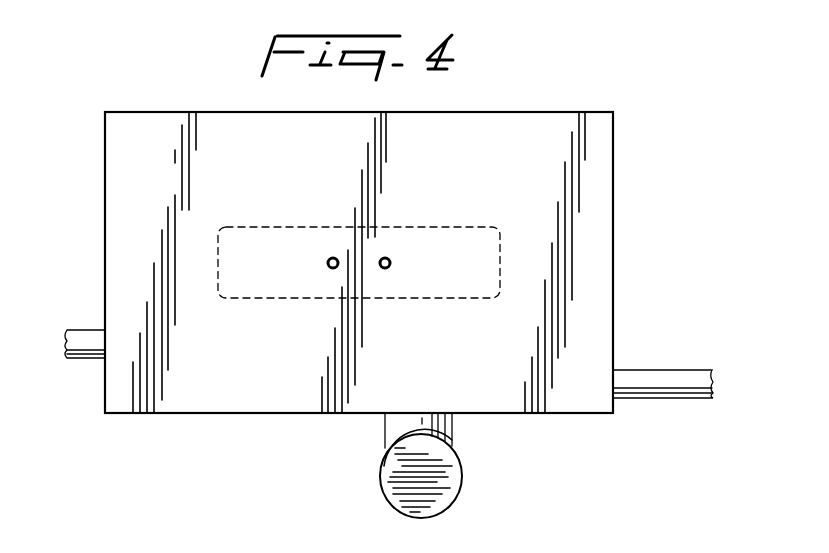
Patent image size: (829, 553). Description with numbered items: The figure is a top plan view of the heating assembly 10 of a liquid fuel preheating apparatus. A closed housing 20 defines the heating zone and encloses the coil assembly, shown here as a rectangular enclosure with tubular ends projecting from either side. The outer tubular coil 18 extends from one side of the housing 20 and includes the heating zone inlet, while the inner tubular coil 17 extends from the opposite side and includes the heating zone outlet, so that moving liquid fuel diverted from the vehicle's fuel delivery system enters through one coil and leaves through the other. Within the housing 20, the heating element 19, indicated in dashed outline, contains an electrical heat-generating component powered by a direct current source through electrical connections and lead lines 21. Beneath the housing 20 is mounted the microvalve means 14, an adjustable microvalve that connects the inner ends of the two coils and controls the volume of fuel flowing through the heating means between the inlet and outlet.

The heating assembly 10 is at (243, 423).
The microvalve means 14 is at (462, 480).
The inner tubular coil 17 is at (77, 360).
The outer tubular coil 18 is at (675, 400).
The heating element 19 is at (420, 257).
The closed housing 20 is at (173, 186).
The lead lines 21 is at (327, 267).